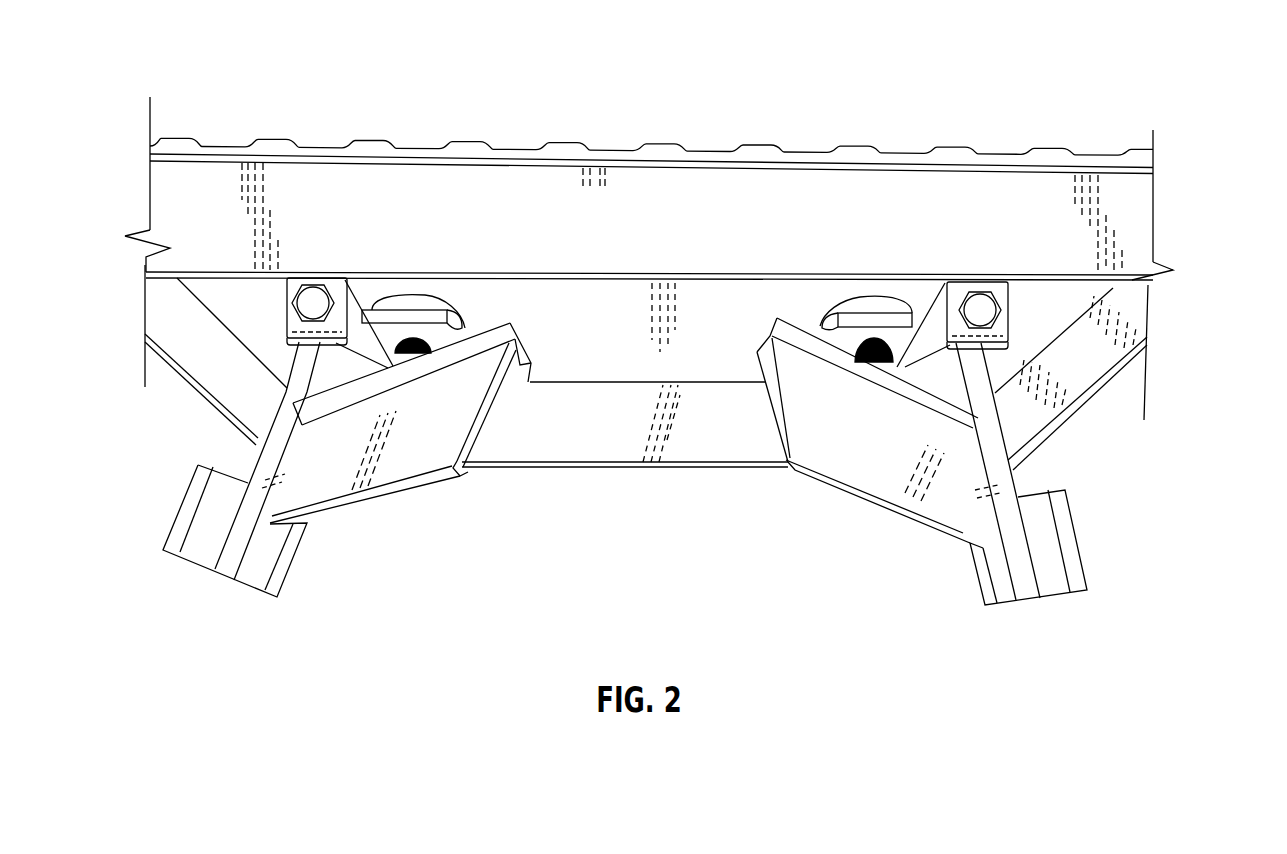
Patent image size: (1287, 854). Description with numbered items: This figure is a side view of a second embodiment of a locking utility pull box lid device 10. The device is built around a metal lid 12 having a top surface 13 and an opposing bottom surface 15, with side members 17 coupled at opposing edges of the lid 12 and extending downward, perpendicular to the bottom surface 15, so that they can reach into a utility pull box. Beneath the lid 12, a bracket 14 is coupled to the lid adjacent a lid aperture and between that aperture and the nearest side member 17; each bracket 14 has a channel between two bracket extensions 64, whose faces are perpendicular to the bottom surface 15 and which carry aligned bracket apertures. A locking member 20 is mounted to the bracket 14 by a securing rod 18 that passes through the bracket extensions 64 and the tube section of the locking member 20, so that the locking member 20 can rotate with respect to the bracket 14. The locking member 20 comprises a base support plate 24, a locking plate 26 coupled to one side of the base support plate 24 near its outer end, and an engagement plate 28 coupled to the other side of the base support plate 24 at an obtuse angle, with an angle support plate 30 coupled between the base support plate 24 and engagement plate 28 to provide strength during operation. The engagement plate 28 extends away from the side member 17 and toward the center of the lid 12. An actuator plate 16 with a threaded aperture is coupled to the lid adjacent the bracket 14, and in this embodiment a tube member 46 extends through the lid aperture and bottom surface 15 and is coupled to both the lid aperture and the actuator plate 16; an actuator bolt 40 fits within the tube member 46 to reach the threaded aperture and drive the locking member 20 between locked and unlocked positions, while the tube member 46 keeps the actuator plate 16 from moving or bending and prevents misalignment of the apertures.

The locking utility pull box lid device 10 is at (693, 163).
The lid 12 is at (1063, 188).
The top surface 13 is at (710, 150).
The bracket 14 is at (1028, 321).
The bottom surface 15 is at (588, 357).
The actuator plate 16 is at (913, 310).
The side member 17 is at (229, 370).
The securing rod 18 is at (975, 300).
The locking member 20 is at (933, 443).
The base support plate 24 is at (1018, 540).
The locking plate 26 is at (1077, 573).
The engagement plate 28 is at (801, 339).
The angle support plate 30 is at (867, 431).
The actuator rod 40 is at (853, 345).
The tube member 46 is at (862, 308).
The bracket extension 64 is at (1000, 292).